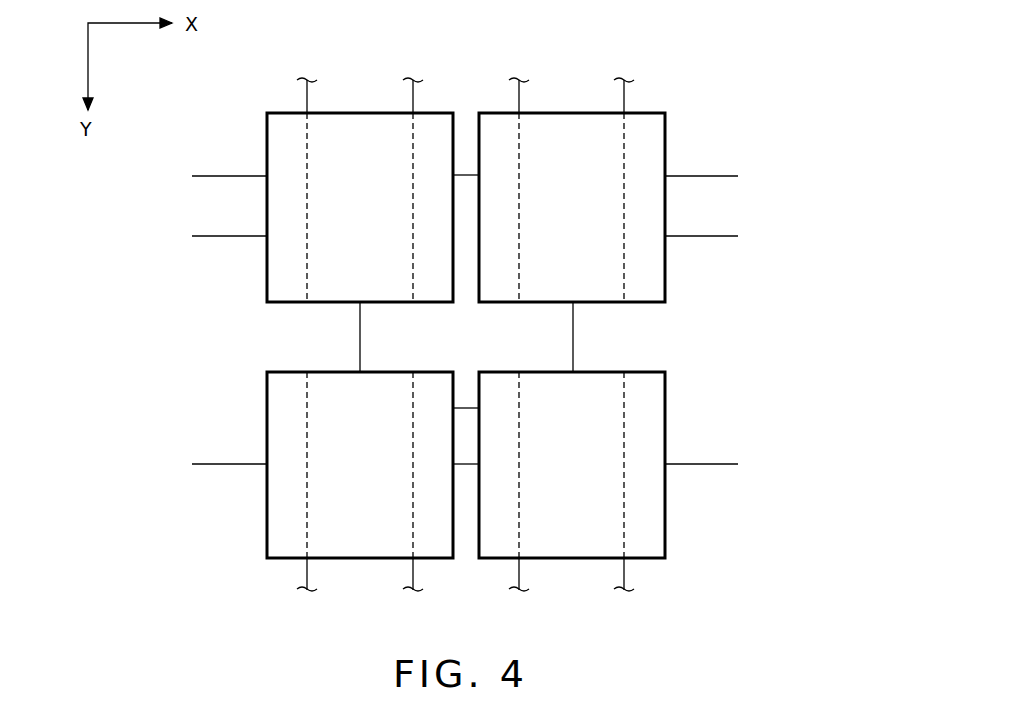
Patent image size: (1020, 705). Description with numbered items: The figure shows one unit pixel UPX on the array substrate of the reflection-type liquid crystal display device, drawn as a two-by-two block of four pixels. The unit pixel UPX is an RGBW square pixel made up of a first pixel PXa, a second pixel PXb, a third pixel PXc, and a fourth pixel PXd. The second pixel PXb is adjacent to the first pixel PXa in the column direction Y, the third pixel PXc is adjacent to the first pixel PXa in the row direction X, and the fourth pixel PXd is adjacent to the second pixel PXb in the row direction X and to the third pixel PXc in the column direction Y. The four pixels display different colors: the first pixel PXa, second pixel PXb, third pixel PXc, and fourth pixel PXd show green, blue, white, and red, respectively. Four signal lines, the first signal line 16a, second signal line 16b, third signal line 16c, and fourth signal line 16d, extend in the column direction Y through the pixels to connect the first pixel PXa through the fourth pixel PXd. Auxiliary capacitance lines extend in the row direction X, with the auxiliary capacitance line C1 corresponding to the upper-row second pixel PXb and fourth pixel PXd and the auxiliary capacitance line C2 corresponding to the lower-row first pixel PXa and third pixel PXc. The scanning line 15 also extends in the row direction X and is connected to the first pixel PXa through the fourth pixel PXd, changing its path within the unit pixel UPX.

The first signal line 16a is at (305, 93).
The second signal line 16b is at (411, 93).
The third signal line 16c is at (517, 93).
The fourth signal line 16d is at (622, 93).
The scanning line 15 is at (220, 238).
The auxiliary capacitance line C1 is at (467, 172).
The auxiliary capacitance line C2 is at (220, 466).
The first pixel PXa is at (278, 418).
The second pixel PXb is at (276, 147).
The third pixel PXc is at (656, 418).
The fourth pixel PXd is at (657, 146).
The unit pixel UPX is at (681, 100).